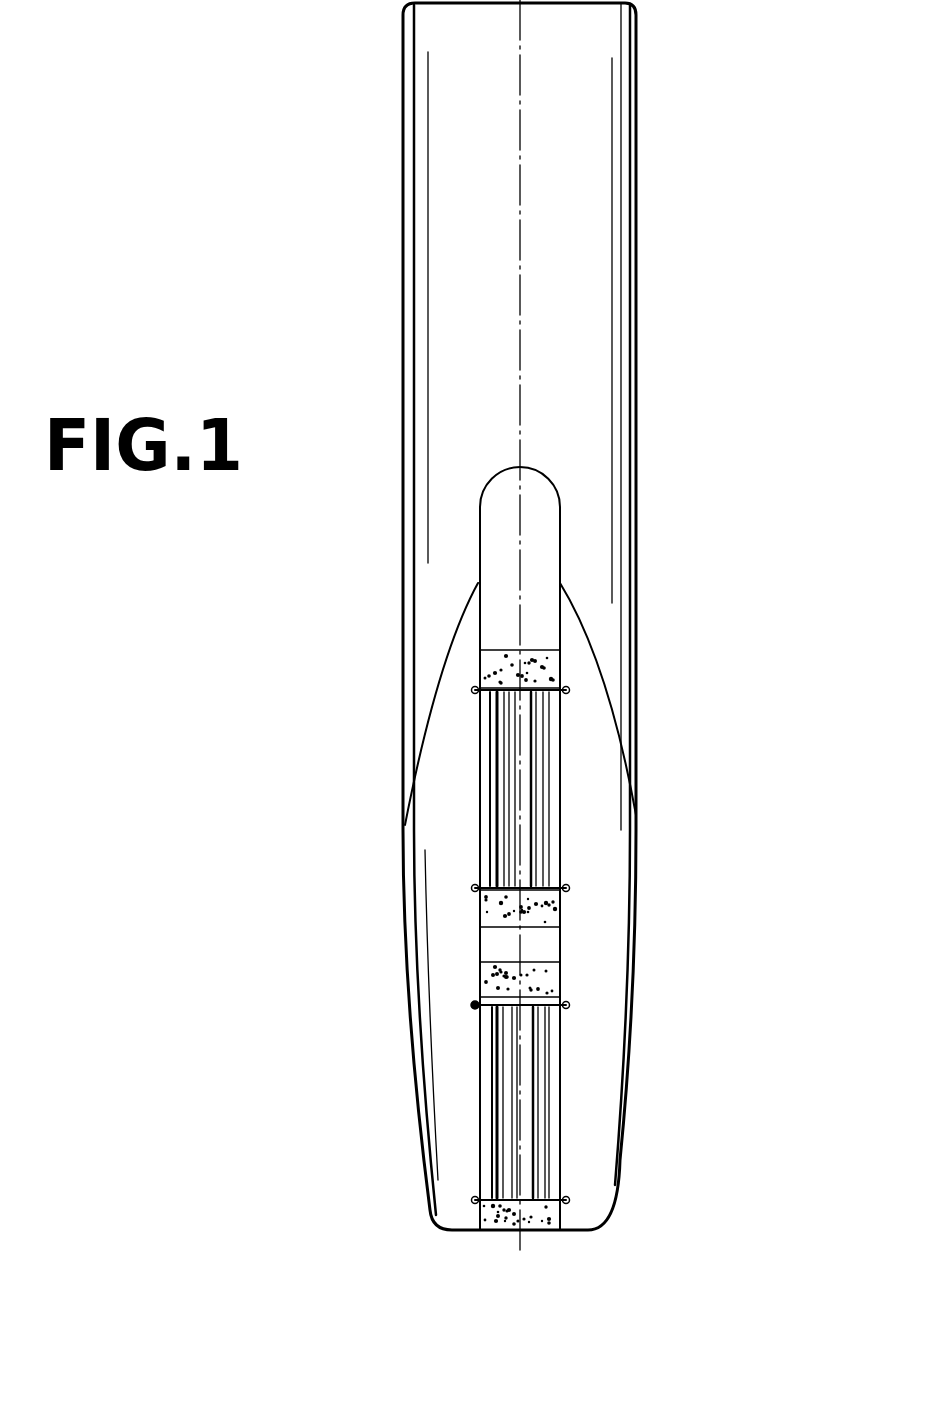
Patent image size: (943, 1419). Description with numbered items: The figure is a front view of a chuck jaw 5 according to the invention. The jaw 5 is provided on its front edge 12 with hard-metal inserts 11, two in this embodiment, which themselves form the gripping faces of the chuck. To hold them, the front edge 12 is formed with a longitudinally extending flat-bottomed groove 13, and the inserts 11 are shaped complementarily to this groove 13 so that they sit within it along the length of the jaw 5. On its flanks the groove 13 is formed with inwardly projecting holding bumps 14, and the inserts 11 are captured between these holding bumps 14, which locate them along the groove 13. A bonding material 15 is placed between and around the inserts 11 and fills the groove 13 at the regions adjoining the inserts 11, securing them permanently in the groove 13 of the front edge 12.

The jaw 5 is at (603, 160).
The hard-metal insert 11 is at (502, 790).
The front edge 12 is at (450, 1070).
The groove 13 is at (537, 526).
The holding bump 14 is at (568, 690).
The bonding material 15 is at (537, 668).